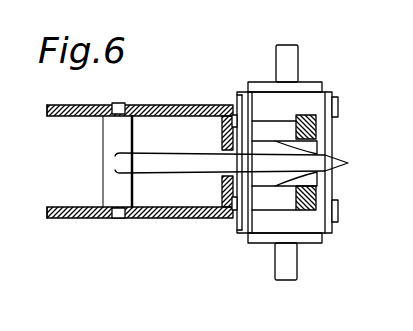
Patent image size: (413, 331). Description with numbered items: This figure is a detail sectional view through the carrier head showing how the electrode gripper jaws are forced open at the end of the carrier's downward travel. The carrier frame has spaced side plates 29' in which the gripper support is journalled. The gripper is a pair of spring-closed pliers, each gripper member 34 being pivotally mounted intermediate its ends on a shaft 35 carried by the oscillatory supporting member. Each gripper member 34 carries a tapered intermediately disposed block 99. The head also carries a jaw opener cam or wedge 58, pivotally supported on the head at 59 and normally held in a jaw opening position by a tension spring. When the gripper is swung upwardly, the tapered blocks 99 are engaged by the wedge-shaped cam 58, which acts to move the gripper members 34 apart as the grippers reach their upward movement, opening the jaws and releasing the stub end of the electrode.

The side plates 29' is at (140, 162).
The pivot 59 is at (121, 103).
The jaw opener cam or wedge 58 is at (164, 162).
The tapered blocks 99 is at (278, 142).
The gripper member 34 is at (303, 112).
The shaft 35 is at (340, 104).